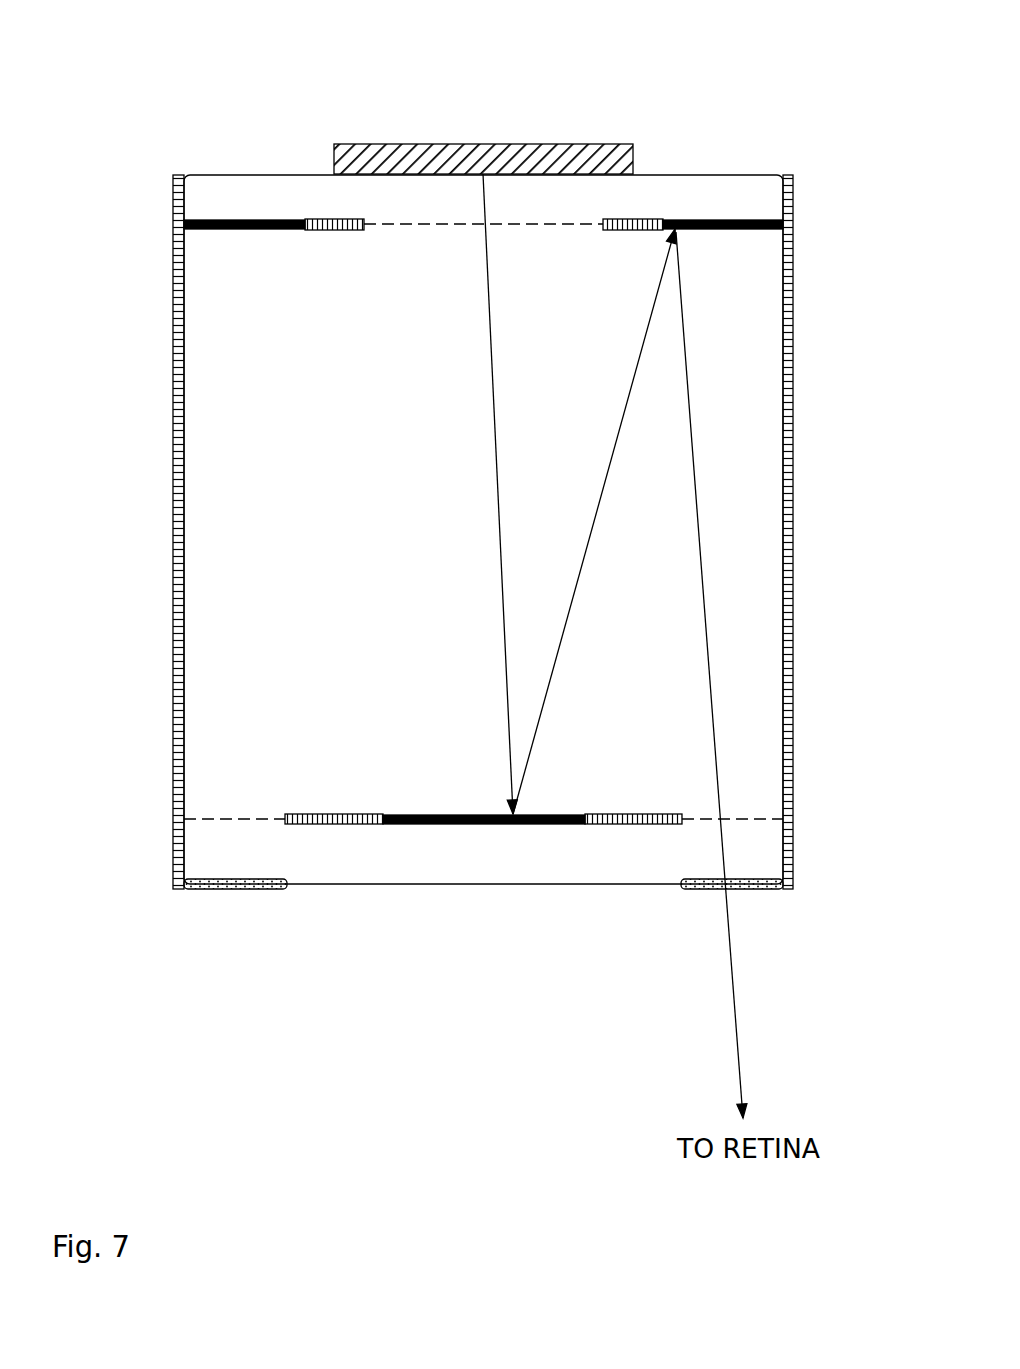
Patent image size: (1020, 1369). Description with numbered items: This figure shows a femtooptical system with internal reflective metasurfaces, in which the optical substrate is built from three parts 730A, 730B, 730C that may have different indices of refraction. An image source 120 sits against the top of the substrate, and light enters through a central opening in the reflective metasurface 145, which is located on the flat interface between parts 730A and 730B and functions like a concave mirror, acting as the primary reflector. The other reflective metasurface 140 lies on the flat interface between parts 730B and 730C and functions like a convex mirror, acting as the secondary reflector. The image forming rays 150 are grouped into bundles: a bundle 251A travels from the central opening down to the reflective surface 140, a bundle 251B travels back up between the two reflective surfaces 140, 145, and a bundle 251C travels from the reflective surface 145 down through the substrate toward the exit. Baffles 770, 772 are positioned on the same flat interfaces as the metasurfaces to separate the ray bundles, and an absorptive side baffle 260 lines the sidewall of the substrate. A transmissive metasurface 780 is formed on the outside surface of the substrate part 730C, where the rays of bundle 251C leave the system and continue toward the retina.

The image source 120 is at (456, 144).
The reflective metasurface 145 is at (216, 220).
The side baffle 260 is at (175, 391).
The baffle 770 is at (337, 230).
The baffle 772 is at (637, 824).
The substrate part 730A is at (330, 211).
The substrate part 730B is at (348, 709).
The substrate part 730C is at (348, 866).
The reflective metasurface 140 is at (470, 824).
The transmissive metasurface 780 is at (750, 889).
The image forming rays 150 is at (615, 646).
The bundle of rays 251A is at (516, 494).
The bundle of rays 251B is at (594, 521).
The bundle of rays 251C is at (711, 675).